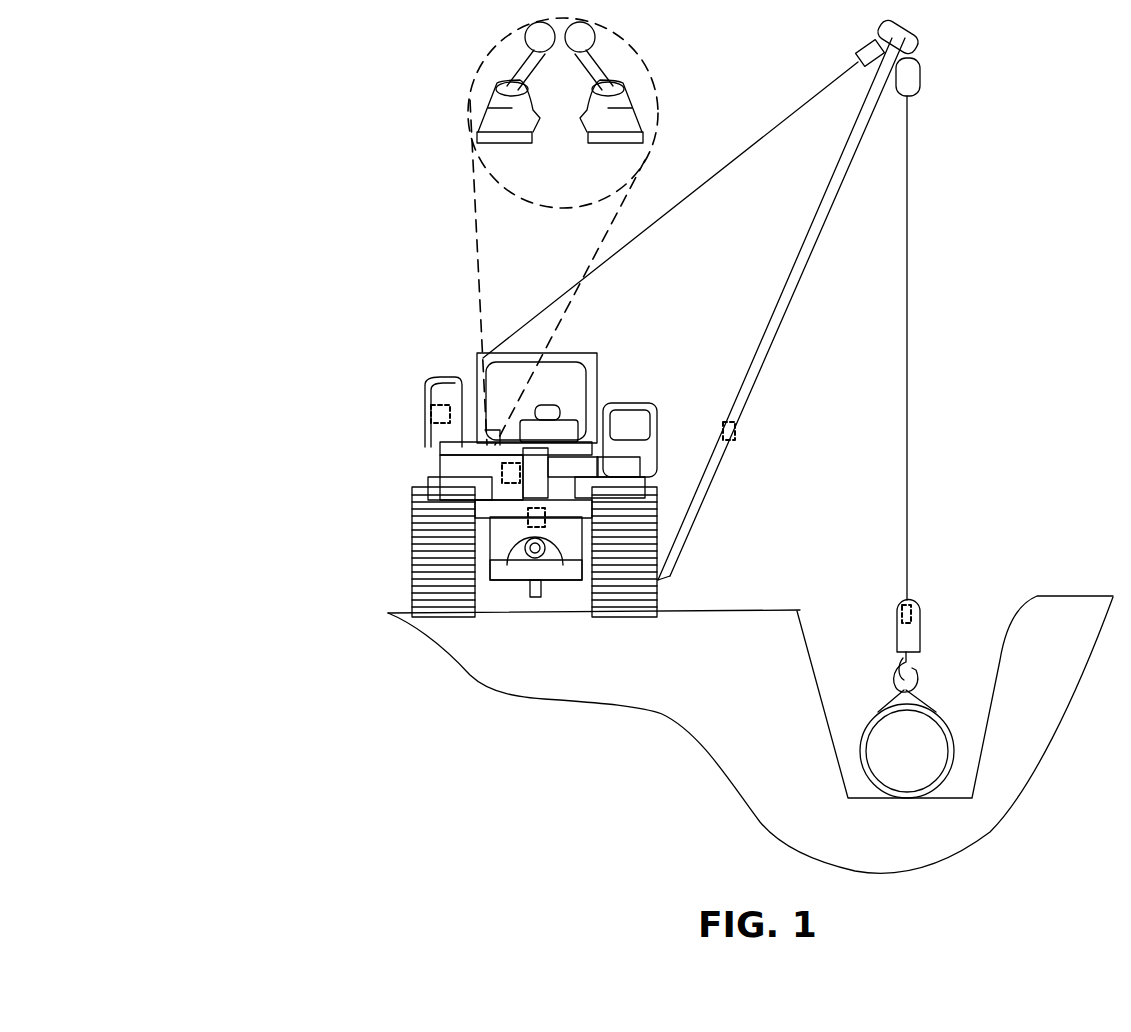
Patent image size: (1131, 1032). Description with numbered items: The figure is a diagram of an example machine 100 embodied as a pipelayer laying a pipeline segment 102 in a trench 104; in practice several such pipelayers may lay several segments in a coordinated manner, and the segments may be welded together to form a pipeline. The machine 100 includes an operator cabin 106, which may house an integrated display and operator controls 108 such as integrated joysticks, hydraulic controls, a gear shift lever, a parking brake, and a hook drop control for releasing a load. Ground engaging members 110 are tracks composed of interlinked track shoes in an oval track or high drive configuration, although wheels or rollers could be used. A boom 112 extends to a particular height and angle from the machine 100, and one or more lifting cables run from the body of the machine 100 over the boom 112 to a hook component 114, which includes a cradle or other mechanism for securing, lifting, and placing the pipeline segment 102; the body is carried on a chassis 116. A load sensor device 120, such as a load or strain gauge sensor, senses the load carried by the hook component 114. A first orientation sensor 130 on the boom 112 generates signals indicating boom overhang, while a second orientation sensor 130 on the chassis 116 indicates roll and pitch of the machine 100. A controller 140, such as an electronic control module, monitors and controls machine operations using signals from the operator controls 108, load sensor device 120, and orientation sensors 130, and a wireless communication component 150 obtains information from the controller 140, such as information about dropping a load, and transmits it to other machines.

The machine 100 is at (310, 68).
The pipeline segment 102 is at (951, 724).
The trench 104 is at (833, 768).
The operator cabin 106 is at (476, 359).
The operator controls 108 is at (471, 101).
The ground engaging members 110 is at (477, 613).
The boom 112 is at (798, 259).
The hook component 114 is at (888, 678).
The chassis 116 is at (571, 531).
The load sensor device 120 is at (898, 622).
The orientation sensor 130 is at (528, 511).
The controller 140 is at (501, 466).
The wireless communication component 150 is at (427, 406).